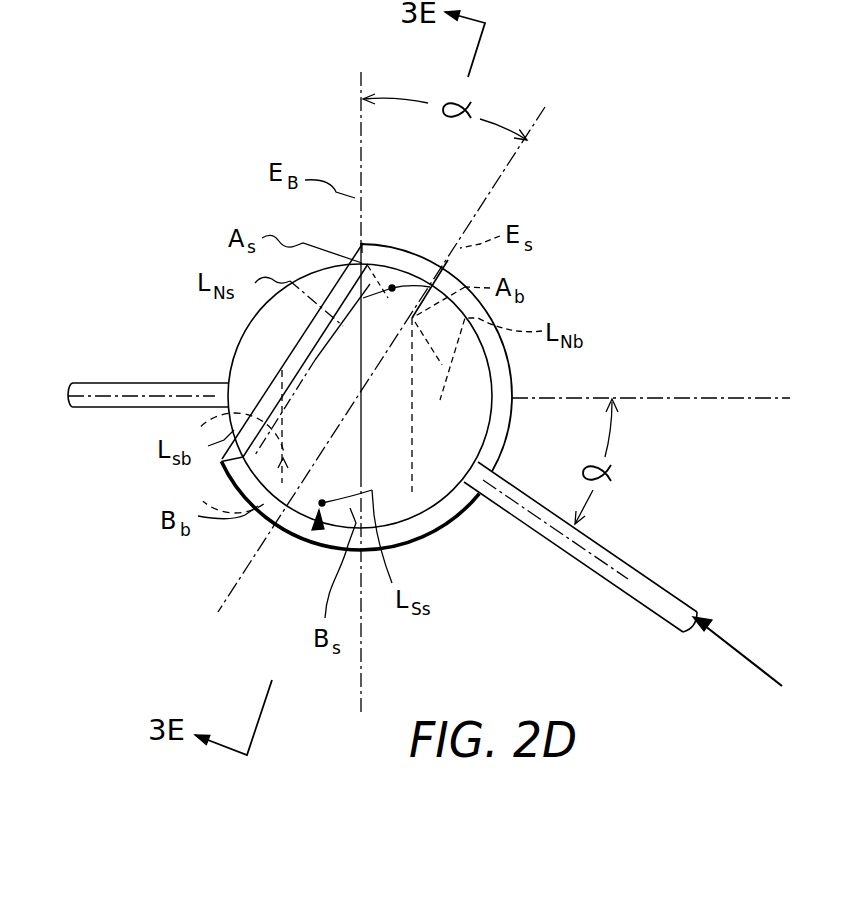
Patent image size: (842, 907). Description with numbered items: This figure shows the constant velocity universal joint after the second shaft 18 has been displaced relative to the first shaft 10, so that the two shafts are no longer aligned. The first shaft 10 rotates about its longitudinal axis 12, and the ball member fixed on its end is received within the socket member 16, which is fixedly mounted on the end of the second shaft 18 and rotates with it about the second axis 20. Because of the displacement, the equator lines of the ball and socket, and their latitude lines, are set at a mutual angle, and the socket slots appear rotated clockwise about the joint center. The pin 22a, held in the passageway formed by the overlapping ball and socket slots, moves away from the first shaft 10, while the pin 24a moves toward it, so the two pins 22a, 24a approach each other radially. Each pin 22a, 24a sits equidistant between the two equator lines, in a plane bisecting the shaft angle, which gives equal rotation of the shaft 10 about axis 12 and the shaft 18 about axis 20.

The first shaft 10 is at (147, 383).
The longitudinal axis 12 is at (90, 392).
The socket member 16 is at (513, 407).
The second shaft 18 is at (640, 572).
The second axis 20 is at (722, 638).
The pin 22a is at (393, 285).
The pin 24a is at (315, 528).